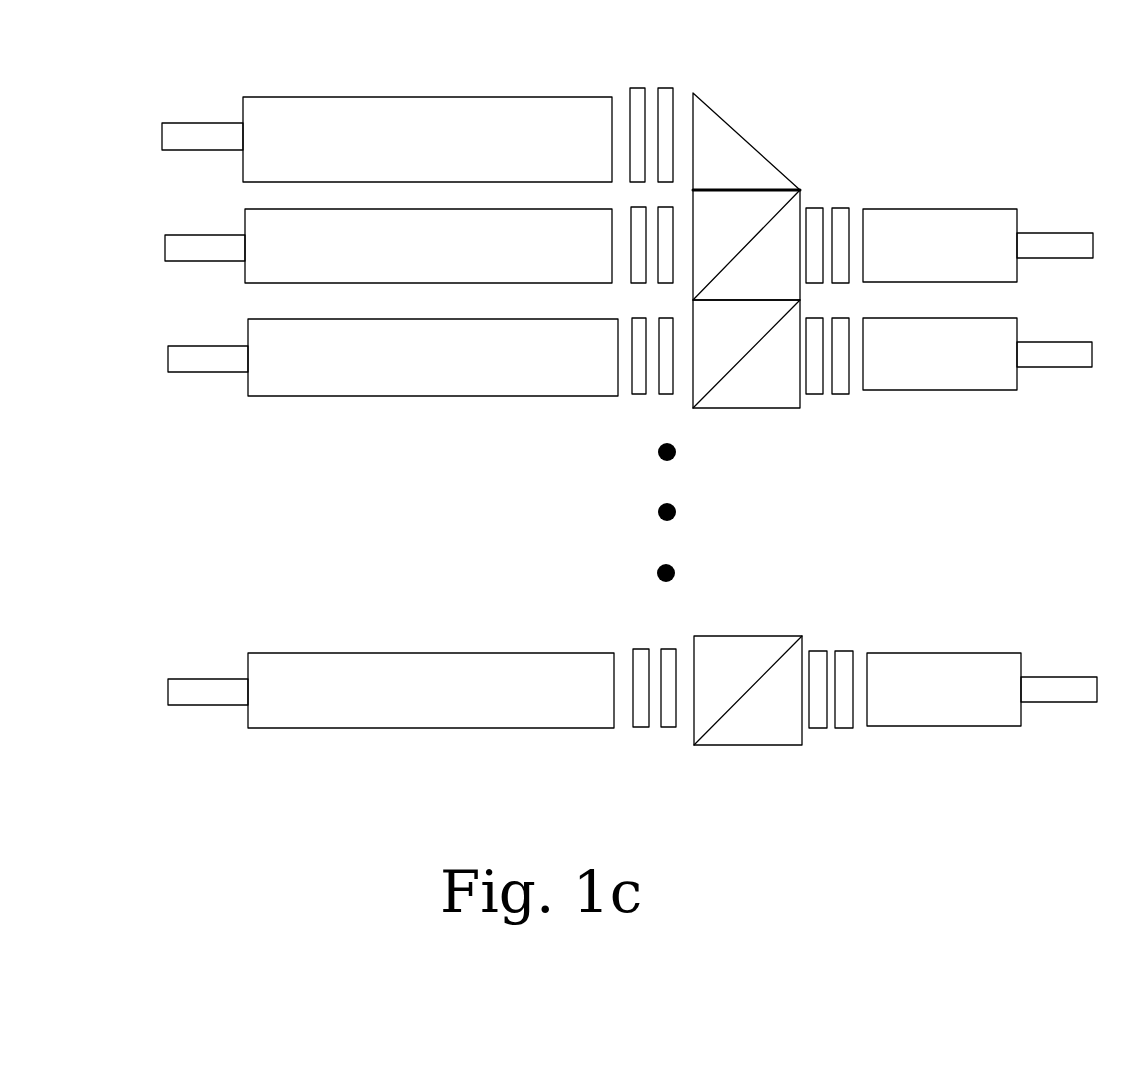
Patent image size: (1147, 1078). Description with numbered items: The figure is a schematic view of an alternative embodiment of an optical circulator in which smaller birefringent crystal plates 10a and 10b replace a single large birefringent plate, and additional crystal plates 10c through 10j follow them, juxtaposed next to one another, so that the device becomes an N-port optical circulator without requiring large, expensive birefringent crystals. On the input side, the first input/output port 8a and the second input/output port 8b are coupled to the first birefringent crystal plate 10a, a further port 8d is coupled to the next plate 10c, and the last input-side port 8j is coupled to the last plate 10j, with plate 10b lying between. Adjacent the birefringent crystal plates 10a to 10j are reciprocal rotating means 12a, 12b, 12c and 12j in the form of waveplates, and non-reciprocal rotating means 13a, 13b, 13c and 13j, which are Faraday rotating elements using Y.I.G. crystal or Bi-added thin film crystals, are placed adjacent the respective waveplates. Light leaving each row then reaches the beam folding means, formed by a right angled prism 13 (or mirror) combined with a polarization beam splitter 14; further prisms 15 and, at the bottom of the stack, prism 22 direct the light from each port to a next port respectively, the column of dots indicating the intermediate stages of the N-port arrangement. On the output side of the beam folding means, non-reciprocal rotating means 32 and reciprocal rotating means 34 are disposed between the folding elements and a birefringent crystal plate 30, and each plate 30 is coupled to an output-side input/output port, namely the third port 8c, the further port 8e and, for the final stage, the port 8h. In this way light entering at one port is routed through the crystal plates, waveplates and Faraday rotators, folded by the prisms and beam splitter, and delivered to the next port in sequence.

The first input/output port 8a is at (202, 122).
The second input/output port 8b is at (200, 235).
The third input/output port 8c is at (1074, 233).
The input/output port 8d is at (198, 346).
The input/output port 8e is at (1075, 367).
The input/output port 8h is at (1083, 702).
The input/output port 8j is at (196, 679).
The birefringent crystal plate 10a is at (360, 97).
The birefringent crystal plate 10b is at (490, 283).
The birefringent crystal plate 10c is at (300, 396).
The birefringent crystal plate 10j is at (310, 729).
The reciprocal rotating means 12a is at (636, 88).
The reciprocal rotating means 12b is at (631, 207).
The reciprocal rotating means 12c is at (639, 394).
The reciprocal rotating means 12j is at (640, 727).
The non-reciprocal rotating means 13a is at (662, 90).
The non-reciprocal rotating means 13b is at (670, 284).
The non-reciprocal rotating means 13c is at (667, 394).
The non-reciprocal rotating means 13j is at (668, 727).
The right angled prism 13 is at (770, 160).
The polarization beam splitter 14 is at (694, 212).
The prism 15 is at (698, 327).
The prism 22 is at (694, 641).
The birefringent crystal plate 30 is at (990, 209).
The non-reciprocal rotating means 32 is at (810, 207).
The reciprocal rotating means 34 is at (838, 208).